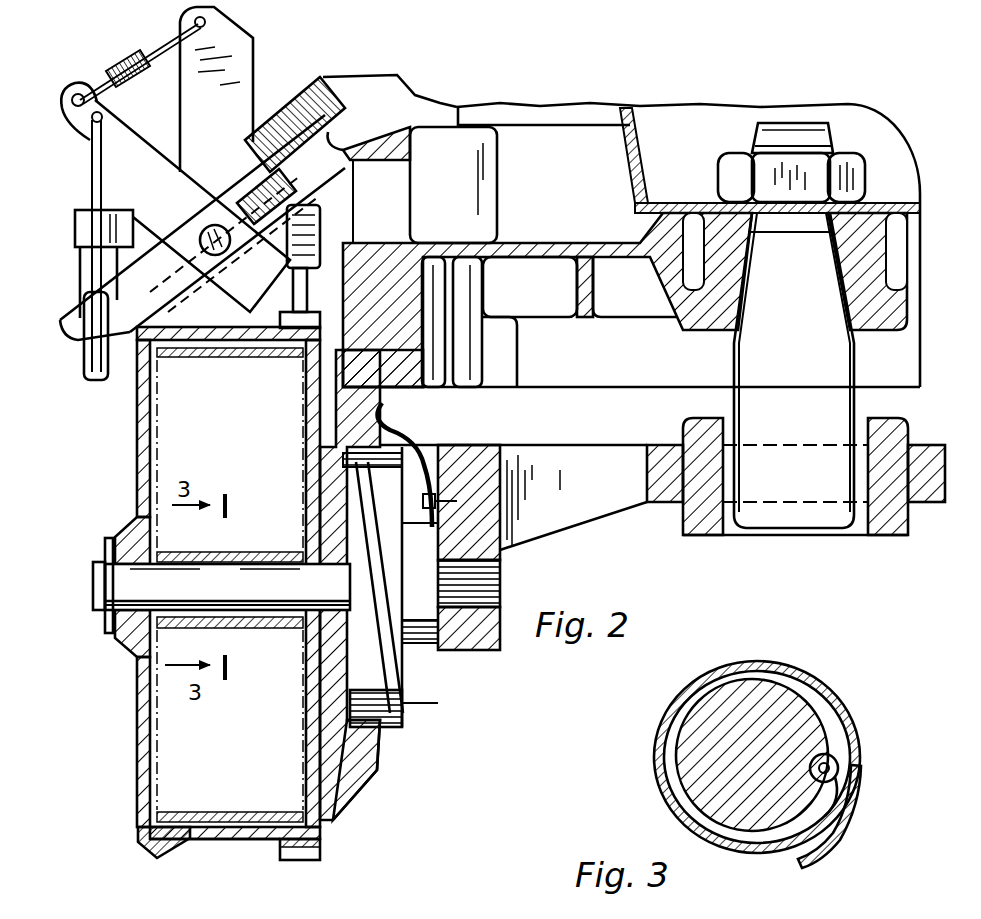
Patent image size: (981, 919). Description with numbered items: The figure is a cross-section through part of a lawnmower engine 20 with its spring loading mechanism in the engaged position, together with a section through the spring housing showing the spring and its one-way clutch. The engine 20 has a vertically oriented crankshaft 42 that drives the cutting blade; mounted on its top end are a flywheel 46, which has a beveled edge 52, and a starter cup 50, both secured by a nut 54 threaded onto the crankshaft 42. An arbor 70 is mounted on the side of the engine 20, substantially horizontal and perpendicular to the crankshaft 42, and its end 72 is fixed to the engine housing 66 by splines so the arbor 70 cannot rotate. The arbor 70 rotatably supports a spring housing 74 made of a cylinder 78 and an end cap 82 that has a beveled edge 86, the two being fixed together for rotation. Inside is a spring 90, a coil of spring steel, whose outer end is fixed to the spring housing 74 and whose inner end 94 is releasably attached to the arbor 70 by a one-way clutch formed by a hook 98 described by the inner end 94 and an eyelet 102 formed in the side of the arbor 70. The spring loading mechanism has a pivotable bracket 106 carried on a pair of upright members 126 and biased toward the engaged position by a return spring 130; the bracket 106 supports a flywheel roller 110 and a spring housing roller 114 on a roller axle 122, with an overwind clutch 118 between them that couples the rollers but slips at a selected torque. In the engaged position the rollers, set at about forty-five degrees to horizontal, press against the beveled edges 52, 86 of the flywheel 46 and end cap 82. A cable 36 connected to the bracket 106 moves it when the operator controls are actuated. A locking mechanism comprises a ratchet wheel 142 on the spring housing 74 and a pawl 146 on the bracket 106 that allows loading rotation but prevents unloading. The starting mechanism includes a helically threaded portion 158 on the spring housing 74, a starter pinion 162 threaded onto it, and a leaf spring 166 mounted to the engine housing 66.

In FIG. 2, the engine 20 is at (553, 95).
In FIG. 2, the cable 36 is at (100, 367).
In FIG. 2, the crankshaft 42 is at (747, 362).
In FIG. 2, the flywheel 46 is at (395, 242).
In FIG. 2, the starter cup 50 is at (643, 125).
In FIG. 2, the beveled edge 52 is at (345, 148).
In FIG. 2, the nut 54 is at (838, 160).
In FIG. 2, the engine housing 66 is at (457, 651).
In FIG. 2, the arbor 70 is at (258, 578).
In FIG. 3, the arbor 70 is at (767, 693).
In FIG. 2, the end 72 is at (470, 588).
In FIG. 2, the spring housing 74 is at (128, 755).
In FIG. 2, the cylinder 78 is at (252, 842).
In FIG. 2, the end cap 82 is at (138, 818).
In FIG. 2, the beveled edge 86 is at (187, 847).
In FIG. 2, the spring 90 is at (265, 810).
In FIG. 3, the spring 90 is at (840, 838).
In FIG. 3, the inner end 94 is at (838, 745).
In FIG. 3, the hook 98 is at (835, 762).
In FIG. 3, the eyelet 102 is at (810, 765).
In FIG. 2, the pivotable bracket 106 is at (140, 128).
In FIG. 2, the flywheel roller 110 is at (278, 98).
In FIG. 2, the spring housing roller 114 is at (290, 205).
In FIG. 2, the overwind clutch 118 is at (175, 354).
In FIG. 2, the roller axle 122 is at (182, 134).
In FIG. 2, the upright members 126 is at (225, 38).
In FIG. 2, the return spring 130 is at (128, 58).
In FIG. 2, the ratchet wheel 142 is at (323, 852).
In FIG. 2, the pawl 146 is at (308, 288).
In FIG. 2, the helically threaded portion 158 is at (403, 702).
In FIG. 2, the starter pinion 162 is at (353, 752).
In FIG. 2, the leaf spring 166 is at (400, 427).